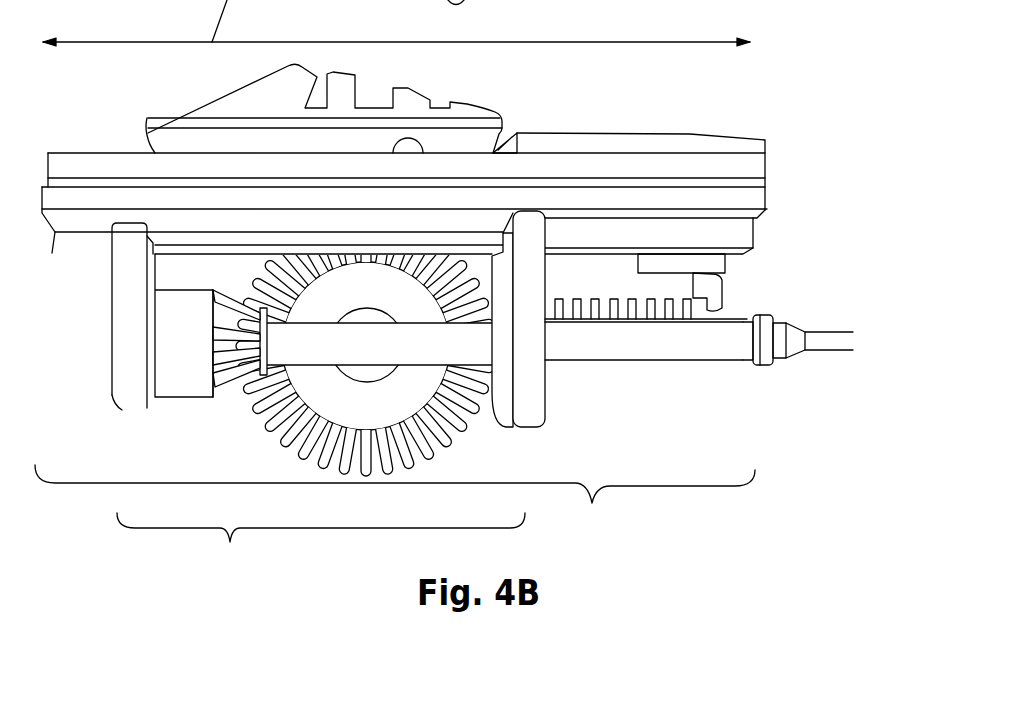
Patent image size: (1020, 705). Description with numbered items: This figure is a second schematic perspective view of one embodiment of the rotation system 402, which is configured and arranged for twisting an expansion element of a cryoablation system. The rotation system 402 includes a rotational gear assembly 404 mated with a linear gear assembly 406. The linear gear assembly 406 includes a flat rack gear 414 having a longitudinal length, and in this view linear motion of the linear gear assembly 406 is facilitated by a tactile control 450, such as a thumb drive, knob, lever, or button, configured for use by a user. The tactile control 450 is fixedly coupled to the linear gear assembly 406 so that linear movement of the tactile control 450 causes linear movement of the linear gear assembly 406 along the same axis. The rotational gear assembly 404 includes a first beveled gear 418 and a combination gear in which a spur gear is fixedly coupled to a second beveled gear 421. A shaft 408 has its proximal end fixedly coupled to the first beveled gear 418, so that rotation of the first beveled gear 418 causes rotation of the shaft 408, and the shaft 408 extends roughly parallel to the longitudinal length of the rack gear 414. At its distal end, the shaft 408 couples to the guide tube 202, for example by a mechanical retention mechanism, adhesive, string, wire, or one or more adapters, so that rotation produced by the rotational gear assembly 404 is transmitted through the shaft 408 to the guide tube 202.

The guide tube 202 is at (842, 337).
The rotation system 402 is at (804, 118).
The rotational gear assembly 404 is at (321, 543).
The linear gear assembly 406 is at (395, 503).
The shaft 408 is at (670, 337).
The flat rack gear 414 is at (693, 288).
The first beveled gear 418 is at (215, 385).
The second beveled gear 421 is at (412, 437).
The tactile control 450 is at (240, 107).